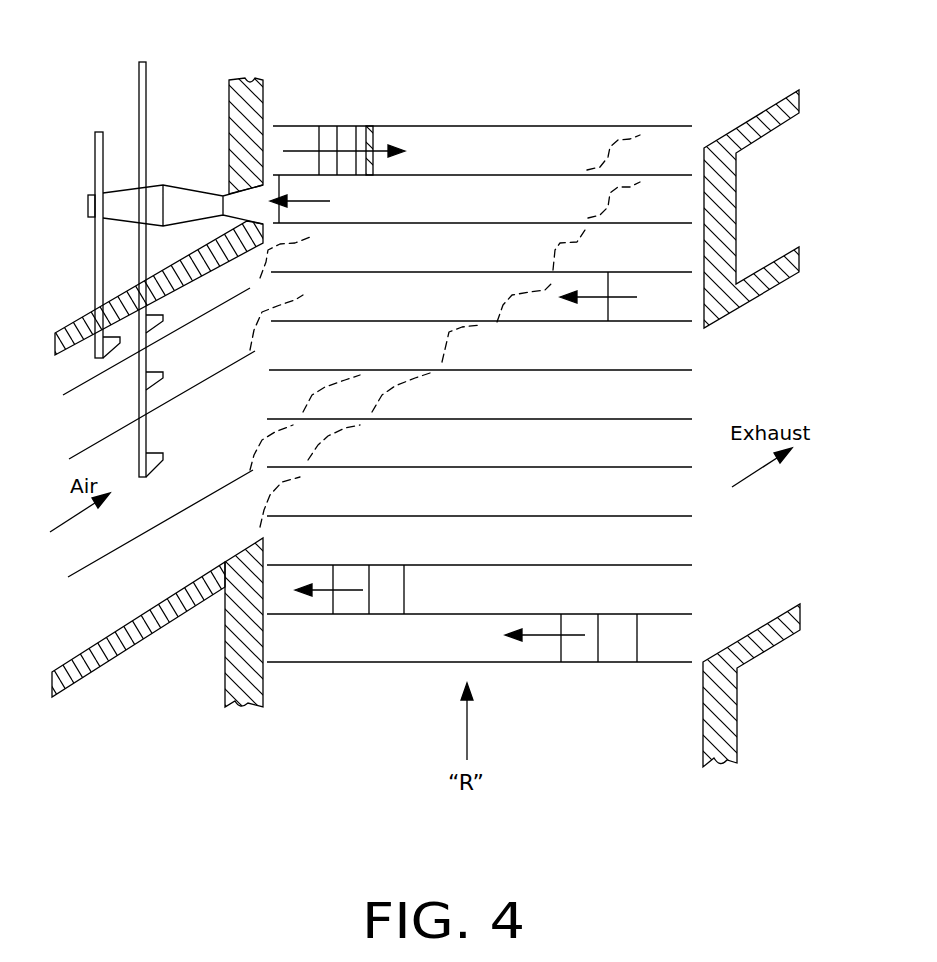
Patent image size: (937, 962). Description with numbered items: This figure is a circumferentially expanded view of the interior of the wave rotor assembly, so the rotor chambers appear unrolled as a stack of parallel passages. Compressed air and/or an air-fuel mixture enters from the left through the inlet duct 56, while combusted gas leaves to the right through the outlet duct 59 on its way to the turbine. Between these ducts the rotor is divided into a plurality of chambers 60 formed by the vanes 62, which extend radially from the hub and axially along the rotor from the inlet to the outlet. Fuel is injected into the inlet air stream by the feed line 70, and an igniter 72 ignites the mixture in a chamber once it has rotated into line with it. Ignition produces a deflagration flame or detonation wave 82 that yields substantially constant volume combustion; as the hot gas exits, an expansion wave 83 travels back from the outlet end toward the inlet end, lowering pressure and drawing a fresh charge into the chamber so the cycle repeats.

The inlet duct 56 is at (92, 673).
The outlet duct 59 is at (760, 350).
The chambers 60 is at (485, 193).
The vanes 62 is at (593, 126).
The feed line 70 is at (143, 62).
The igniter 72 is at (193, 187).
The detonation wave 82 is at (361, 150).
The expansion wave 83 is at (452, 613).